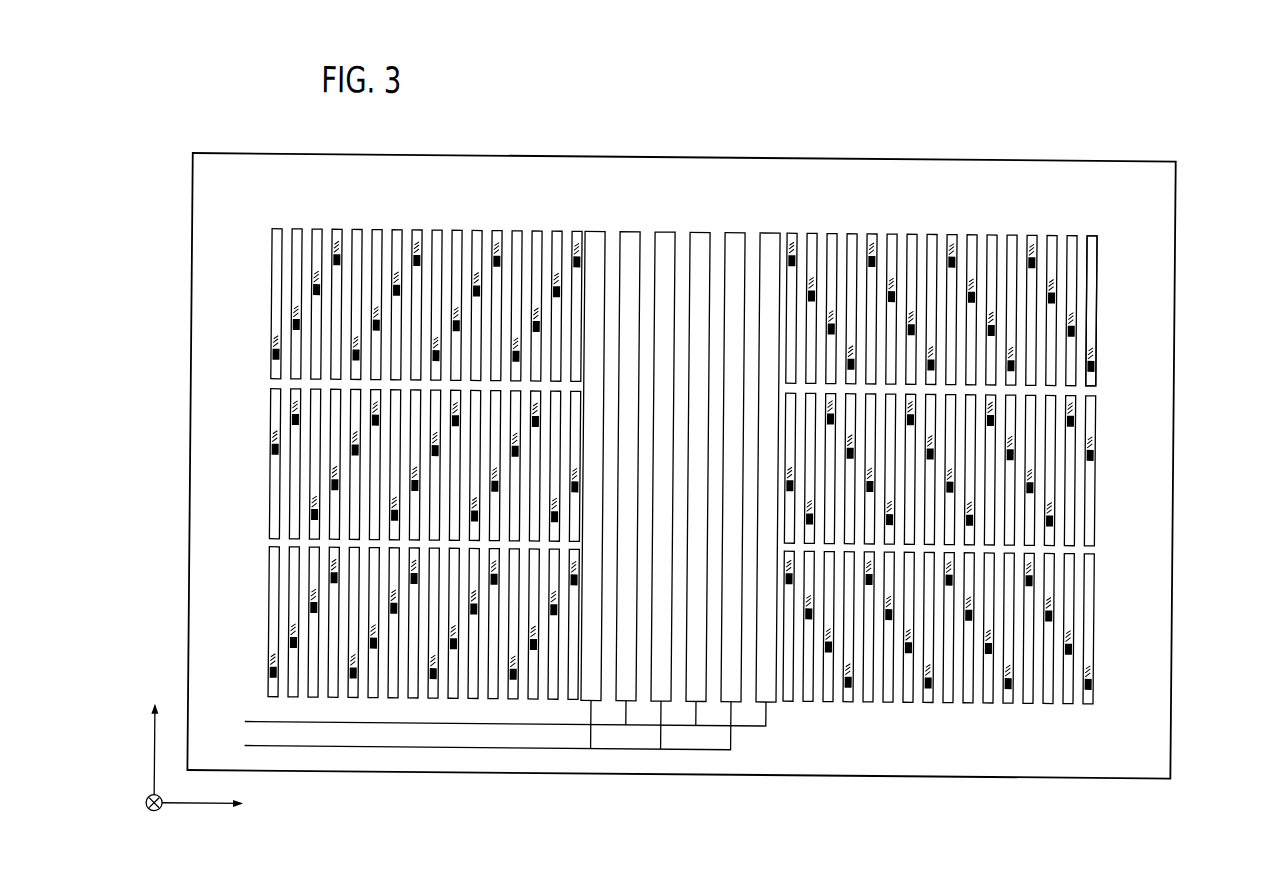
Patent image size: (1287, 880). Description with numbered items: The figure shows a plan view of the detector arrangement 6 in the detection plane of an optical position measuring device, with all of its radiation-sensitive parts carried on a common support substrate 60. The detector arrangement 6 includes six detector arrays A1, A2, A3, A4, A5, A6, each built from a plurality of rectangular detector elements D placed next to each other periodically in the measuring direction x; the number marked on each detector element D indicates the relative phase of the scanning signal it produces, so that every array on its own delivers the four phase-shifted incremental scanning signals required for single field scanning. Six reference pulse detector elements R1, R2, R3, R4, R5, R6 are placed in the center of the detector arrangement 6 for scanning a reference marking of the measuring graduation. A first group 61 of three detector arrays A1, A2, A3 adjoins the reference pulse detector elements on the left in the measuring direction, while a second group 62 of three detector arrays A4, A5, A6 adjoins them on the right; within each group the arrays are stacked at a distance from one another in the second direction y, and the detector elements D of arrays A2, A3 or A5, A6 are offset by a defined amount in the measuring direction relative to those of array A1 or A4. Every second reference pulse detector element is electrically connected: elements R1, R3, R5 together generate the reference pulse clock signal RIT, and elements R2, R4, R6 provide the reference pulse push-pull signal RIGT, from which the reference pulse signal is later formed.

The detector arrangement 6 is at (682, 152).
The support substrate 60 is at (1120, 172).
The first group of detector areas 61 is at (183, 302).
The second group of detector areas 62 is at (1183, 305).
The detector array A1 is at (264, 302).
The detector array A2 is at (264, 462).
The detector array A3 is at (264, 621).
The detector array A4 is at (1099, 305).
The detector array A5 is at (1099, 465).
The detector array A6 is at (1099, 624).
The reference pulse detector element R1 is at (593, 228).
The reference pulse detector element R2 is at (628, 228).
The reference pulse detector element R3 is at (665, 228).
The reference pulse detector element R4 is at (698, 228).
The reference pulse detector element R5 is at (735, 228).
The reference pulse detector element R6 is at (768, 228).
The detector element D is at (1090, 250).
The reference pulse clock signal RIT is at (488, 720).
The reference pulse push-pull signal RIGT is at (470, 733).